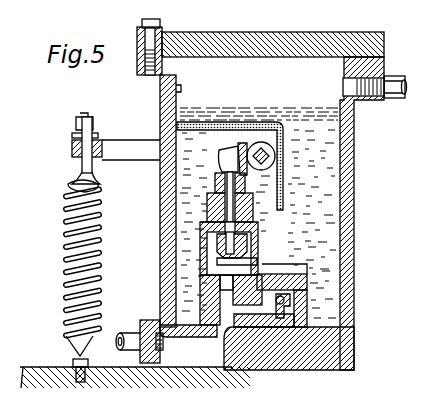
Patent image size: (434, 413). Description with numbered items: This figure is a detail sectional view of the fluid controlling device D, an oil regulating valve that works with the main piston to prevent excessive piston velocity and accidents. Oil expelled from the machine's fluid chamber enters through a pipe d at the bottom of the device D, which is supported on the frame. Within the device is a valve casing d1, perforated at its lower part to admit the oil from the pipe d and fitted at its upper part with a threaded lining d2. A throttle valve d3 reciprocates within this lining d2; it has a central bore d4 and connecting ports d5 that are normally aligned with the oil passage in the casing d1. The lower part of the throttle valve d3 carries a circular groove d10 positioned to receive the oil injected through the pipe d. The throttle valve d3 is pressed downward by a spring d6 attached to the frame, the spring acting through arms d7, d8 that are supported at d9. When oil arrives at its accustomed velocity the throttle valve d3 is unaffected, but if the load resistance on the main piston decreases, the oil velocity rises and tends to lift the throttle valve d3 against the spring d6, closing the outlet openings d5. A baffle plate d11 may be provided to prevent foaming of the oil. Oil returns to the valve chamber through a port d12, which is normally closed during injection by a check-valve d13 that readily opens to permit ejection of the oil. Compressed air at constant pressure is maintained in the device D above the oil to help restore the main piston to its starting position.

The fluid controlling device D is at (345, 185).
The pipe d is at (126, 337).
The valve casing d1 is at (213, 250).
The threaded lining d2 is at (207, 195).
The throttle valve d3 is at (265, 257).
The central bore d4 is at (215, 176).
The connecting ports d5 is at (200, 230).
The spring d6 is at (62, 276).
The arm d7 is at (127, 161).
The arm d8 is at (248, 150).
The support d9 is at (270, 144).
The circular groove d10 is at (203, 280).
The baffle plate d11 is at (226, 121).
The port d12 is at (294, 314).
The check-valve d13 is at (267, 328).